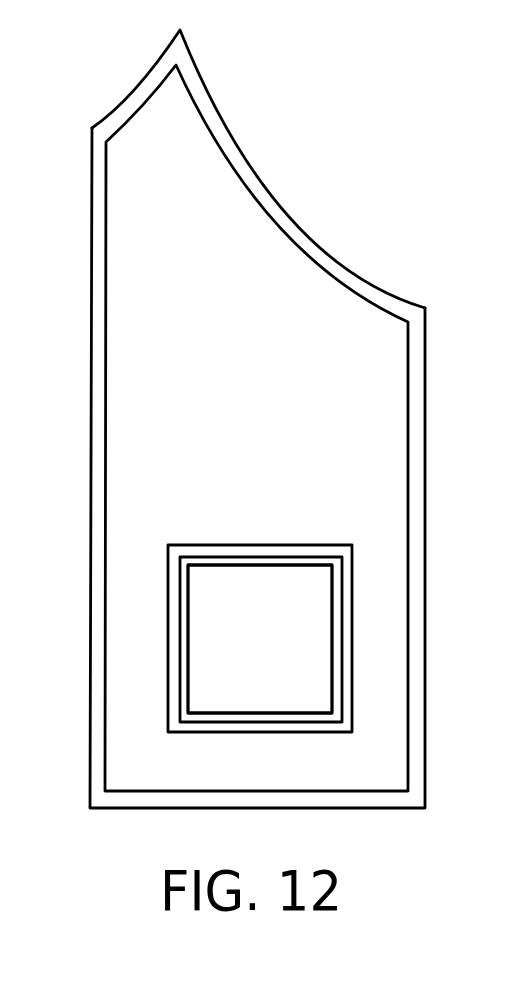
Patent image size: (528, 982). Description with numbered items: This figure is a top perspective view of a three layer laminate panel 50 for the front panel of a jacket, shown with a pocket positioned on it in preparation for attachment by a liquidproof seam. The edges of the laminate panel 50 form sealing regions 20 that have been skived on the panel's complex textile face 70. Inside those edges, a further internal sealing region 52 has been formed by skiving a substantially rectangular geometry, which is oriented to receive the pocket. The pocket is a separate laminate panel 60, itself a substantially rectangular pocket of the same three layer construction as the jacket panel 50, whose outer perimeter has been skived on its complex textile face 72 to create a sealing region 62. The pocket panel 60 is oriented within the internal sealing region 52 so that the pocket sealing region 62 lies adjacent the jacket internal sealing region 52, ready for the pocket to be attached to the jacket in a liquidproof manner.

The sealing regions 20 is at (417, 442).
The laminate panel 50 is at (72, 340).
The internal sealing region 52 is at (347, 602).
The pocket panel 60 is at (249, 622).
The sealing region 62 is at (335, 580).
The complex textile face 70 is at (253, 232).
The complex textile face 72 is at (313, 658).